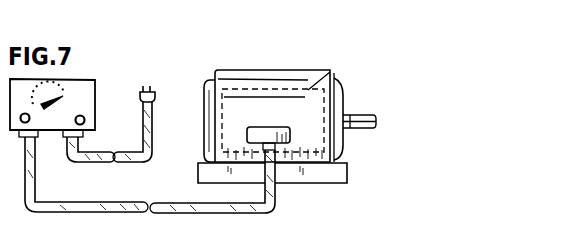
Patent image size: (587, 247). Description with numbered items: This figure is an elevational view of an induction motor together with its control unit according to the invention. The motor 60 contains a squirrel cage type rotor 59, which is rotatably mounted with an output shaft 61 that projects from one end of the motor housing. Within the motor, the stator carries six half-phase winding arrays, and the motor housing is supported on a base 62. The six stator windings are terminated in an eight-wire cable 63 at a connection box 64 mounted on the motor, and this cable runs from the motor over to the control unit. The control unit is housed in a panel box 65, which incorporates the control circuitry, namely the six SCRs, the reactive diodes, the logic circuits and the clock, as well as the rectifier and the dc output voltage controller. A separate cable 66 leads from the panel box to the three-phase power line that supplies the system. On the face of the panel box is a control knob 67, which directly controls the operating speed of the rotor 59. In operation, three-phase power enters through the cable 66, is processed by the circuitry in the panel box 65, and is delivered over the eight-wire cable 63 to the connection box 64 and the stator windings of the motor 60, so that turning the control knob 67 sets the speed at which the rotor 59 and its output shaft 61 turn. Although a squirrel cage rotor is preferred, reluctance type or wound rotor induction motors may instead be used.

The rotor 59 is at (337, 74).
The motor 60 is at (335, 97).
The output shaft 61 is at (353, 128).
The base 62 is at (347, 177).
The eight-wire cable 63 is at (36, 155).
The connection box 64 is at (284, 127).
The panel box 65 is at (94, 82).
The cable 66 is at (153, 113).
The control knob 67 is at (63, 98).